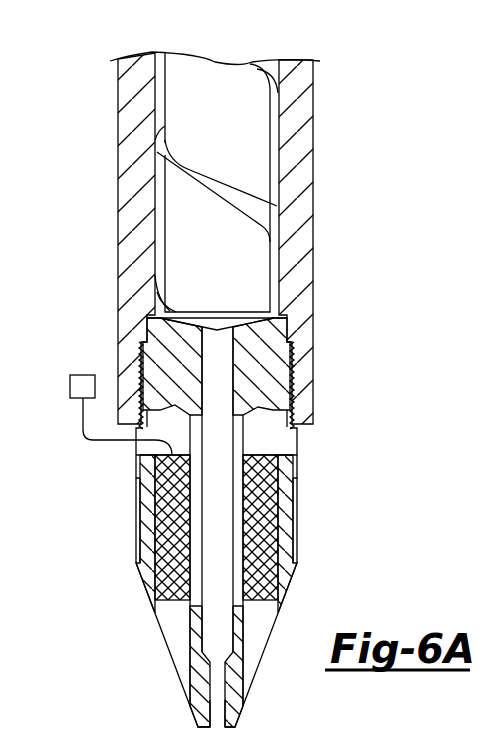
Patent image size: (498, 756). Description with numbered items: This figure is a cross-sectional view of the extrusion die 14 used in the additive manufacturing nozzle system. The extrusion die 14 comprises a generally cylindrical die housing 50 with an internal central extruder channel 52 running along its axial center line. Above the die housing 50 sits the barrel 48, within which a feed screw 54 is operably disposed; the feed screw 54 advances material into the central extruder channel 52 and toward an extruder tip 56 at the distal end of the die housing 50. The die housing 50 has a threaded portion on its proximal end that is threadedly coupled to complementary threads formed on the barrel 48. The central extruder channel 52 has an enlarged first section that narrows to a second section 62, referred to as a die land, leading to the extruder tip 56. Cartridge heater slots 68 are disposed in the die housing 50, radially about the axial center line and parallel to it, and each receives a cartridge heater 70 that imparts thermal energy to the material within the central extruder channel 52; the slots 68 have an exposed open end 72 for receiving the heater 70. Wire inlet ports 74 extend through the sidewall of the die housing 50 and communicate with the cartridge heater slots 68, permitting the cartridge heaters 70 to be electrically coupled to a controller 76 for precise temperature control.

The extrusion die 14 is at (82, 94).
The barrel 48 is at (314, 104).
The feed screw 54 is at (256, 153).
The central extruder channel 52 is at (218, 368).
The controller 76 is at (87, 374).
The wire inlet ports 74 is at (270, 440).
The die housing 50 is at (140, 500).
The cartridge heater 70 is at (165, 530).
The cartridge heater slots 68 is at (258, 612).
The exposed open end 72 is at (162, 633).
The second section 62 is at (220, 688).
The extruder tip 56 is at (192, 726).